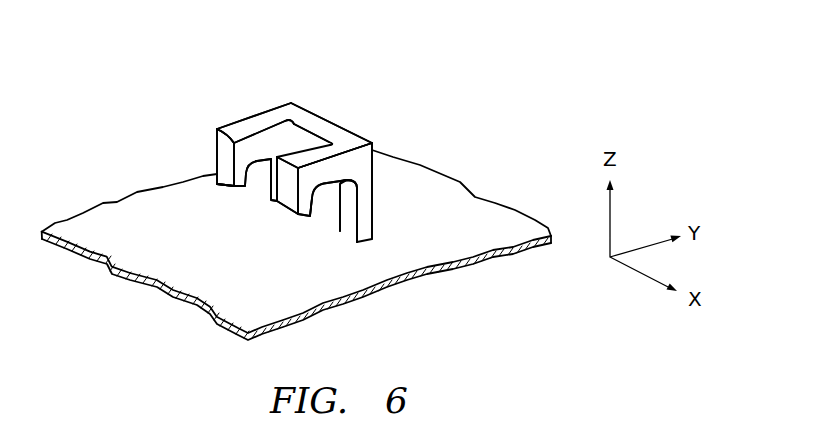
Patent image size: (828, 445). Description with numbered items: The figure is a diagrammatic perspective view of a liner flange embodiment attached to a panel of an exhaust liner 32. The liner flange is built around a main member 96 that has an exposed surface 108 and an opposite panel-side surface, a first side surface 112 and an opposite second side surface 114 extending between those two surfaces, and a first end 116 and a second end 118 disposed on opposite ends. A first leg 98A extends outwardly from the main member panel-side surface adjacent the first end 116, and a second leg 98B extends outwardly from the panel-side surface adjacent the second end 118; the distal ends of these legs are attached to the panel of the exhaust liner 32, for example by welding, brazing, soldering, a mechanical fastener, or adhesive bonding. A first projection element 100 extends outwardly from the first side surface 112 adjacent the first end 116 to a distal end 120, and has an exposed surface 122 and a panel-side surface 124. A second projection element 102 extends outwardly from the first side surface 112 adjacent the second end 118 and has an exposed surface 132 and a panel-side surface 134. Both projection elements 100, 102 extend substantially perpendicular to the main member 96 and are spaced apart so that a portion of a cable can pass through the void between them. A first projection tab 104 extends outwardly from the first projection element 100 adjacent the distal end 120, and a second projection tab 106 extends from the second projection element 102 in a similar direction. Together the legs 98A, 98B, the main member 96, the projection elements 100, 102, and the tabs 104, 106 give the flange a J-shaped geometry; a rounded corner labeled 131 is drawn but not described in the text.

The exhaust liner 32 is at (490, 236).
The main member 96 is at (338, 114).
The first leg 98A is at (367, 222).
The second leg 98B is at (257, 163).
The first projection element 100 is at (280, 227).
The second projection element 102 is at (216, 114).
The first projection tab 104 is at (310, 217).
The second projection tab 106 is at (230, 176).
The exposed surface 108 is at (313, 117).
The first side surface 112 is at (290, 120).
The second side surface 114 is at (360, 147).
The first end 116 is at (360, 165).
The second end 118 is at (278, 114).
The distal end 120 is at (273, 203).
The exposed surface 122 is at (333, 152).
The panel-side surface 124 is at (340, 177).
The rounded corner 131 is at (227, 148).
The exposed surface 132 is at (254, 126).
The panel-side surface 134 is at (218, 184).